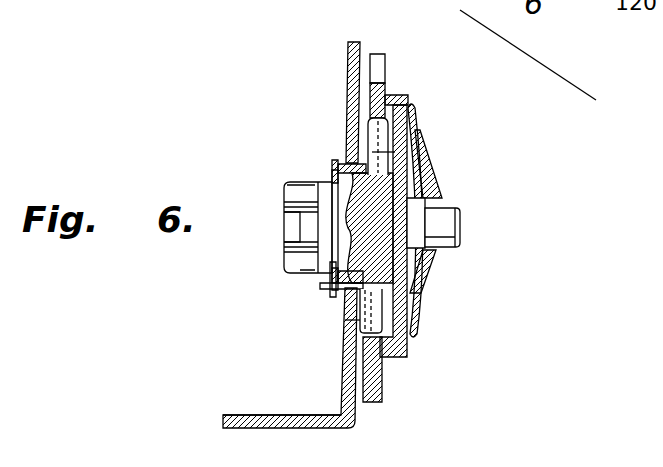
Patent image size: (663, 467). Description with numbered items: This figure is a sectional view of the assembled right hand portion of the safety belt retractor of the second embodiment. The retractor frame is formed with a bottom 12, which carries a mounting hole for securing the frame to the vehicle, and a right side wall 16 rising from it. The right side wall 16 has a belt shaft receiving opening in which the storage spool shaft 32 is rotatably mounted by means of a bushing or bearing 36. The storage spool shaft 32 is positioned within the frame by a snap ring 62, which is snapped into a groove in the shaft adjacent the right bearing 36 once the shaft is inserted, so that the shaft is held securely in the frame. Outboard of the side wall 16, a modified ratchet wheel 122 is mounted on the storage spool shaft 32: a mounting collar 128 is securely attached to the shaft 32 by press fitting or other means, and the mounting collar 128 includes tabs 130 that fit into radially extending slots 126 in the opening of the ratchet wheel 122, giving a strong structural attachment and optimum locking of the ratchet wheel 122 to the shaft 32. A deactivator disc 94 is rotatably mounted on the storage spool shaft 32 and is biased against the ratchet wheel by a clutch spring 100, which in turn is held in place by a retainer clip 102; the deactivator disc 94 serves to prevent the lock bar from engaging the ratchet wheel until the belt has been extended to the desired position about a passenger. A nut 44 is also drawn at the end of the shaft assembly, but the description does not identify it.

The bottom 12 is at (247, 424).
The right side wall 16 is at (348, 62).
The storage spool shaft 32 is at (300, 200).
The bearing 36 is at (362, 160).
The nut 44 is at (290, 245).
The snap ring 62 is at (330, 289).
The deactivator disc 94 is at (397, 98).
The clutch spring 100 is at (414, 311).
The retainer clip 102 is at (433, 190).
The ratchet wheel 122 is at (383, 382).
The slots 126 is at (367, 124).
The mounting collar 128 is at (367, 138).
The tabs 130 is at (375, 152).